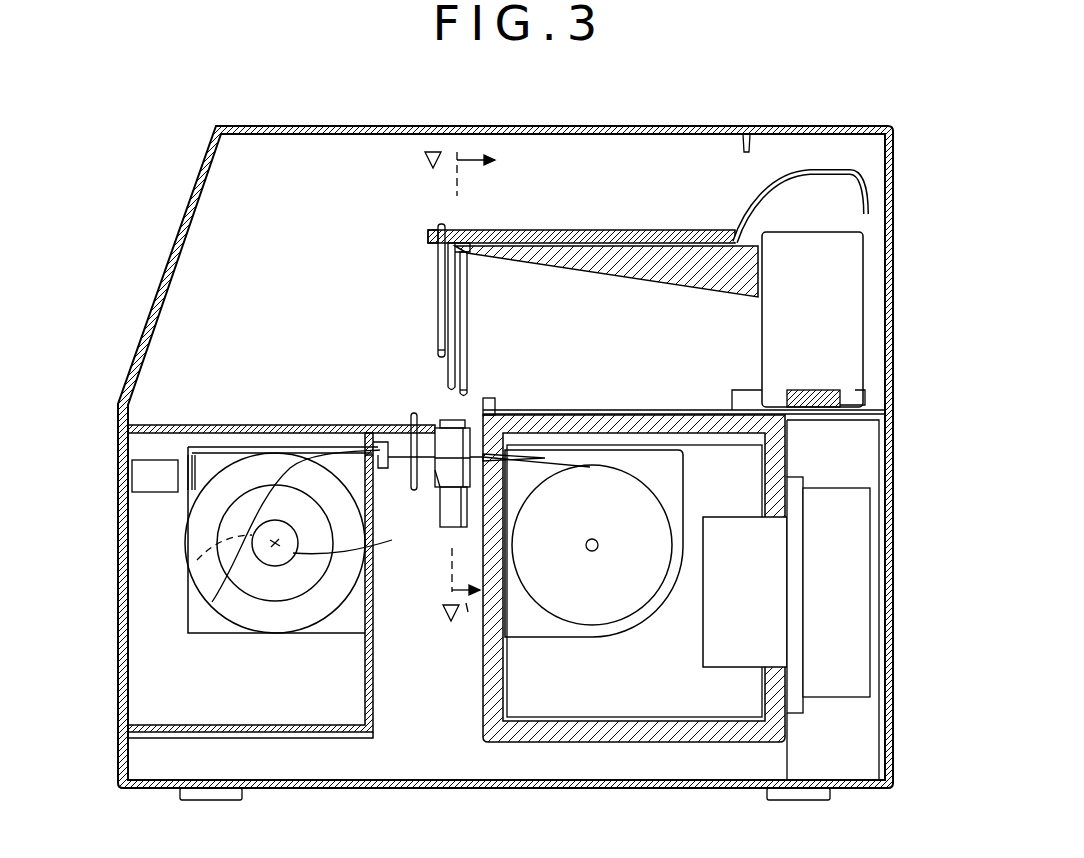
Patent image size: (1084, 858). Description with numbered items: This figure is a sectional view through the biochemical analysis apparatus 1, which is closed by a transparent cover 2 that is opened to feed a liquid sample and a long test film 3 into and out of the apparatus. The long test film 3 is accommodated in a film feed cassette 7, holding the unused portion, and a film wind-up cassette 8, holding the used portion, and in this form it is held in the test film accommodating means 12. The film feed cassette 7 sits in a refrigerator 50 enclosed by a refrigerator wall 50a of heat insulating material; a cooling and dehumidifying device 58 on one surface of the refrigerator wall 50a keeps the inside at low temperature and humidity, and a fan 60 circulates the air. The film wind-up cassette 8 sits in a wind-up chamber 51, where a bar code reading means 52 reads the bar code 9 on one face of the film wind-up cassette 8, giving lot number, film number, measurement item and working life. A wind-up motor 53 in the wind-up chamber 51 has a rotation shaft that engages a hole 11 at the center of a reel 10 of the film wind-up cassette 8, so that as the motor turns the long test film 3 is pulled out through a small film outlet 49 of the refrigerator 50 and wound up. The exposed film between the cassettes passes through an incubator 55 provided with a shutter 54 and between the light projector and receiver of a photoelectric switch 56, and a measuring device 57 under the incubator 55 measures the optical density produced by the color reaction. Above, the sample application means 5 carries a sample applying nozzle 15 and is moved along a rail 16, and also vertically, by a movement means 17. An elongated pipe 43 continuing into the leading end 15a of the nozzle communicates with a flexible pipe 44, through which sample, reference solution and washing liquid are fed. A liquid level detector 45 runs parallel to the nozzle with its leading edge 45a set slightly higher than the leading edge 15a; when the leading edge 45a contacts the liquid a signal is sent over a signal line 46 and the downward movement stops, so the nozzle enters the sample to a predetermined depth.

The biochemical analysis apparatus 1 is at (505, 424).
The transparent cover 2 is at (278, 126).
The long test film 3 is at (562, 410).
The sample application means 5 is at (604, 230).
The film feed cassette 7 is at (672, 447).
The film wind-up cassette 8 is at (188, 515).
The bar code 9 is at (188, 498).
The reel 10 is at (212, 600).
The hole 11 is at (196, 562).
The test film accommodating means 12 is at (534, 390).
The sample applying nozzle 15 is at (468, 326).
The leading edge of sample applying nozzle 15a is at (496, 370).
The rail 16 is at (822, 388).
The movement means 17 is at (845, 298).
The elongated pipe 43 is at (466, 290).
The flexible pipe 44 is at (840, 170).
The liquid level detector 45 is at (438, 276).
The leading edge of liquid level detector 45a is at (440, 366).
The signal line 46 is at (470, 214).
The film outlet 49 is at (500, 458).
The refrigerator 50 is at (650, 700).
The refrigerator wall 50a is at (535, 732).
The wind-up chamber 51 is at (142, 638).
The bar code reading means 52 is at (132, 478).
The wind-up motor 53 is at (359, 559).
The shutter 54 is at (452, 420).
The incubator 55 is at (434, 478).
The photoelectric switch 56 is at (411, 416).
The measuring device 57 is at (441, 522).
The cooling and dehumidifying device 58 is at (850, 566).
The fan 60 is at (805, 557).